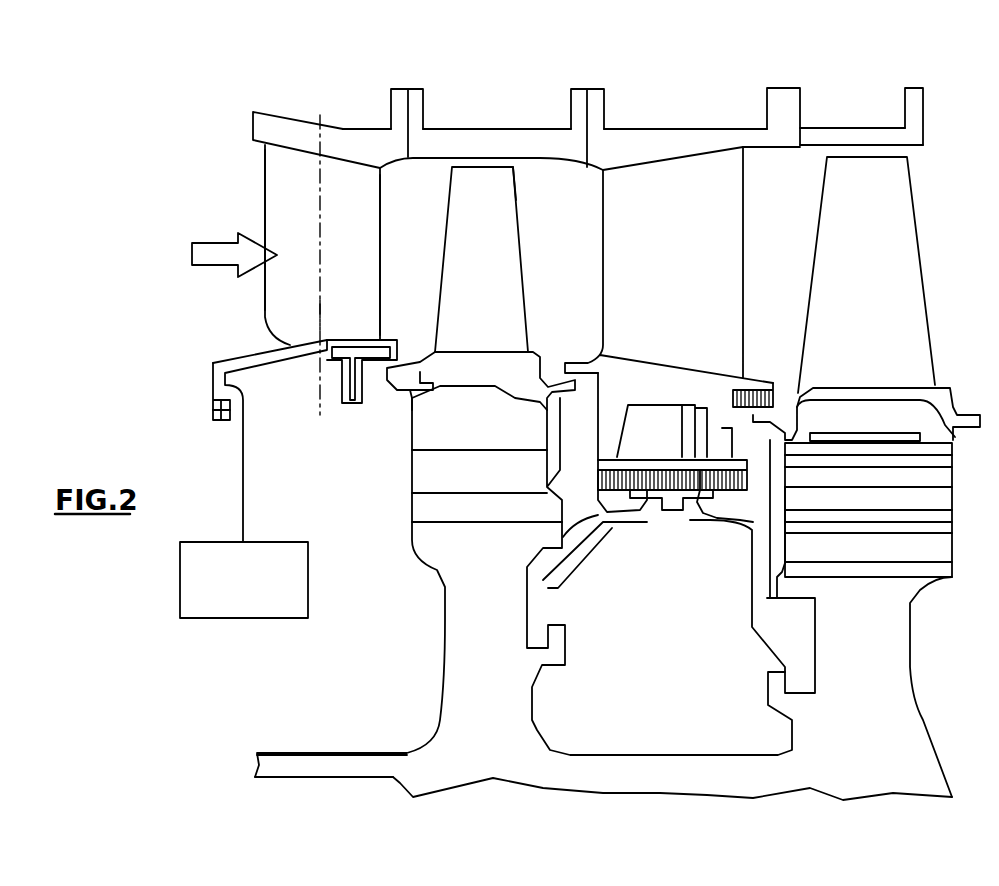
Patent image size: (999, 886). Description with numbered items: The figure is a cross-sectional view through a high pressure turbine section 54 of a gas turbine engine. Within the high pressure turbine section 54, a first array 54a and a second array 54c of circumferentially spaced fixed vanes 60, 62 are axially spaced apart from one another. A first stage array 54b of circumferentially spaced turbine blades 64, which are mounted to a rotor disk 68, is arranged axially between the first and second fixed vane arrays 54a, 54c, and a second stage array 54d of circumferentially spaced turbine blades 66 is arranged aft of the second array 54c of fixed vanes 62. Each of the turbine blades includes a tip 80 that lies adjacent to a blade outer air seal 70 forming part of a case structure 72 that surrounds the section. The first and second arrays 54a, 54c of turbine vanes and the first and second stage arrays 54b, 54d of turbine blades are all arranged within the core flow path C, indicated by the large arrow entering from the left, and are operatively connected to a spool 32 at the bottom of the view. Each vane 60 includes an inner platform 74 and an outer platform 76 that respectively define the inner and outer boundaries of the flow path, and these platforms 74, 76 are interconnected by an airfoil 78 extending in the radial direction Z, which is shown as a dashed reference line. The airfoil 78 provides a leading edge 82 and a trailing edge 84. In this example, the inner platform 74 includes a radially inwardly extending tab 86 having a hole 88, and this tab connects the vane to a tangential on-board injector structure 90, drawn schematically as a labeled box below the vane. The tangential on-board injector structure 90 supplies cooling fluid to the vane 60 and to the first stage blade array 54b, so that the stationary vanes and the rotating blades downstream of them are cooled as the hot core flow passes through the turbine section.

The spool 32 is at (253, 763).
The high pressure turbine section 54 is at (714, 68).
The first array of fixed vanes 54a is at (313, 110).
The first stage array of turbine blades 54b is at (500, 120).
The second array of fixed vanes 54c is at (643, 122).
The second stage array of turbine blades 54d is at (848, 125).
The fixed vane 60 is at (255, 222).
The fixed vane 62 is at (604, 215).
The turbine blade 64 is at (440, 240).
The turbine blade 66 is at (808, 242).
The rotor disk 68 is at (513, 697).
The blade outer air seal 70 is at (437, 145).
The case structure 72 is at (578, 108).
The inner platform 74 is at (277, 355).
The outer platform 76 is at (283, 140).
The airfoil 78 is at (333, 190).
The tip 80 is at (498, 160).
The leading edge 82 is at (262, 183).
The trailing edge 84 is at (387, 258).
The tab 86 is at (215, 378).
The hole 88 is at (230, 420).
The tangential on-board injector (TOBI) structure 90 is at (205, 618).
The core flow path C is at (217, 262).
The radial direction Z is at (320, 317).